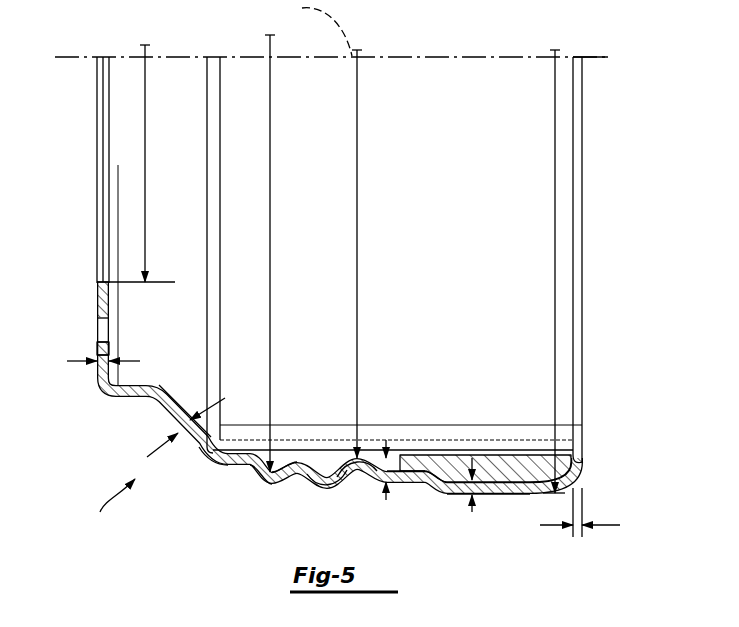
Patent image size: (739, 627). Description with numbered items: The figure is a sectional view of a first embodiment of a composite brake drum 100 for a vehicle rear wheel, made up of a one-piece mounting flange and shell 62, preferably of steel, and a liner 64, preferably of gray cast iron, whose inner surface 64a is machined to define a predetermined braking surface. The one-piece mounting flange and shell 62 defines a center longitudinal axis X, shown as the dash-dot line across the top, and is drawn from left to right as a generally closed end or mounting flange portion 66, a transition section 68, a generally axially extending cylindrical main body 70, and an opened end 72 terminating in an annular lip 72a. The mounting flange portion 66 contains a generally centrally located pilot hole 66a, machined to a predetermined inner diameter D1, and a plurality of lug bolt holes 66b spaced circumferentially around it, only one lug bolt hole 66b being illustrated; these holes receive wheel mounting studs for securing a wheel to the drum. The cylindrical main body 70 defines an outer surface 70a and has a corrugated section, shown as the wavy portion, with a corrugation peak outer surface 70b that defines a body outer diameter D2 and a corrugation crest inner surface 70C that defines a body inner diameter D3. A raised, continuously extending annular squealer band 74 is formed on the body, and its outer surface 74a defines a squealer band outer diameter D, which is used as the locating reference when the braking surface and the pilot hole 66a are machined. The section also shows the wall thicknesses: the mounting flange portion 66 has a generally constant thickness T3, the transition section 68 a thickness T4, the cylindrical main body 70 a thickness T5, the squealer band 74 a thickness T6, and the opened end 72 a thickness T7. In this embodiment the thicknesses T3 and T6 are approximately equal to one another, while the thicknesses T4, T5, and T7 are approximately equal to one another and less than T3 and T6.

The one-piece mounting flange and shell 62 is at (205, 477).
The liner 64 is at (300, 454).
The inner surface 64a is at (410, 454).
The mounting flange portion 66 is at (97, 287).
The pilot hole 66a is at (98, 283).
The lug bolt hole 66b is at (102, 344).
The transition section 68 is at (155, 430).
The cylindrical main body 70 is at (297, 478).
The outer surface 70a is at (328, 485).
The corrugation peak outer surface 70b is at (270, 482).
The corrugation crest inner surface 70C is at (366, 454).
The opened end 72 is at (583, 425).
The annular lip 72a is at (580, 462).
The squealer band 74 is at (512, 454).
The outer surface 74a is at (500, 495).
The composite brake drum 100 is at (109, 511).
The squealer band outer diameter D is at (555, 107).
The pilot hole inner diameter D1 is at (146, 193).
The body outer diameter D2 is at (270, 138).
The body inner diameter D3 is at (358, 85).
The center longitudinal axis X is at (318, 28).
The mounting flange thickness T3 is at (97, 373).
The transition section thickness T4 is at (191, 405).
The cylindrical body thickness T5 is at (387, 494).
The squealer band thickness T6 is at (471, 507).
The opened end thickness T7 is at (576, 537).